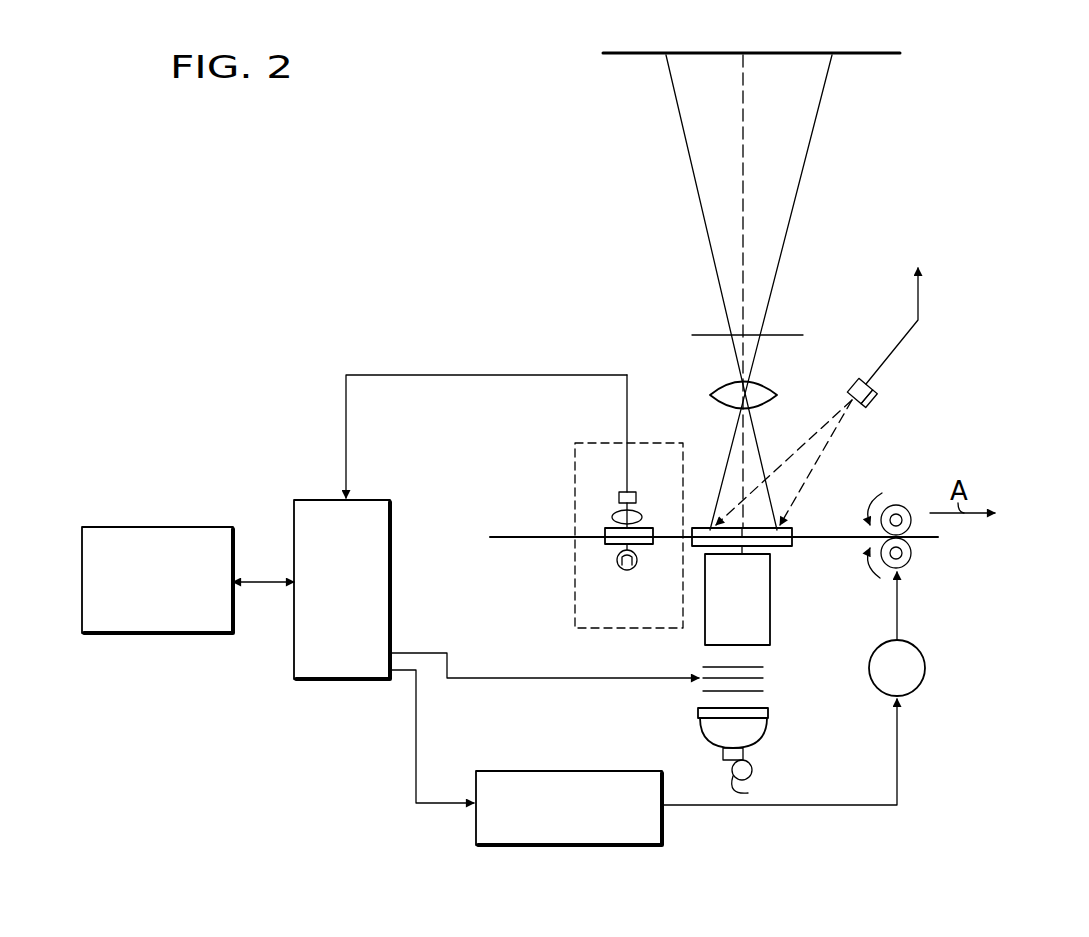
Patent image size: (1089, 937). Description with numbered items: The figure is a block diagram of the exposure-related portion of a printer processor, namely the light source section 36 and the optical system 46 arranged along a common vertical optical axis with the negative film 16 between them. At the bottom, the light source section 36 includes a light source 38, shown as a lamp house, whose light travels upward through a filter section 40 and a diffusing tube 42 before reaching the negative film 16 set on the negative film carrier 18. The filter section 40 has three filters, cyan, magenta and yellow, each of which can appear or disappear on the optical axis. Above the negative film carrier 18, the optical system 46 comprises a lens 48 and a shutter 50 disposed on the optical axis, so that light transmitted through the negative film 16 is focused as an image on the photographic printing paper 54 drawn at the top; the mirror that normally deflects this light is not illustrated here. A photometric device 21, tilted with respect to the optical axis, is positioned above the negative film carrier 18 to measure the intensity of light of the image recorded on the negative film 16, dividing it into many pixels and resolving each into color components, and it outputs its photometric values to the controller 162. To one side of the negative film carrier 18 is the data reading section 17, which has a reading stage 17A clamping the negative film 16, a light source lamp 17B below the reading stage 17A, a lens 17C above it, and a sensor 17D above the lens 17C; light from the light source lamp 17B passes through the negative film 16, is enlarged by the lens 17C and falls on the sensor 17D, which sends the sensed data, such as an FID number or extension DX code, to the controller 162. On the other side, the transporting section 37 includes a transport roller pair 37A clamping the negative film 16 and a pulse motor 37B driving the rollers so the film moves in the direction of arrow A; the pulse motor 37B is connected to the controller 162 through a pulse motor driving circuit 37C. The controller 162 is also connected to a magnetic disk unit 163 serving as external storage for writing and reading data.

The negative film 16 is at (812, 532).
The data reading section 17 is at (591, 443).
The reading stage 17A is at (650, 545).
The light source lamp 17B is at (620, 570).
The lens 17C is at (641, 515).
The sensor 17D is at (619, 497).
The negative film carrier 18 is at (786, 548).
The photometric device 21 is at (870, 396).
The light source section 36 is at (706, 727).
The transporting section 37 is at (953, 594).
The transport roller pair 37A is at (908, 565).
The pulse motor 37B is at (905, 640).
The pulse motor driving circuit 37C is at (582, 847).
The light source 38 is at (768, 738).
The filter section 40 is at (775, 661).
The diffusing tube 42 is at (770, 612).
The optical system 46 is at (526, 259).
The lens 48 is at (722, 388).
The shutter 50 is at (780, 337).
The photographic printing paper 54 is at (860, 55).
The controller 162 is at (390, 567).
The magnetic disk unit 163 is at (120, 525).